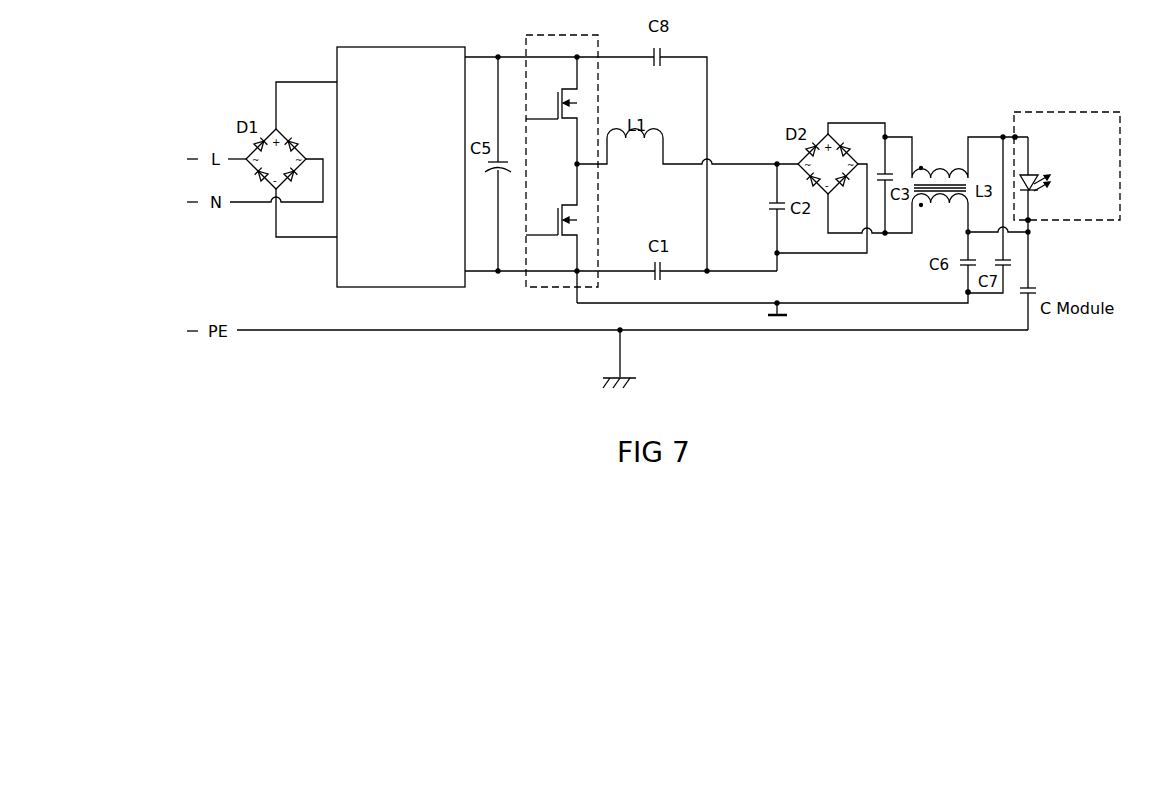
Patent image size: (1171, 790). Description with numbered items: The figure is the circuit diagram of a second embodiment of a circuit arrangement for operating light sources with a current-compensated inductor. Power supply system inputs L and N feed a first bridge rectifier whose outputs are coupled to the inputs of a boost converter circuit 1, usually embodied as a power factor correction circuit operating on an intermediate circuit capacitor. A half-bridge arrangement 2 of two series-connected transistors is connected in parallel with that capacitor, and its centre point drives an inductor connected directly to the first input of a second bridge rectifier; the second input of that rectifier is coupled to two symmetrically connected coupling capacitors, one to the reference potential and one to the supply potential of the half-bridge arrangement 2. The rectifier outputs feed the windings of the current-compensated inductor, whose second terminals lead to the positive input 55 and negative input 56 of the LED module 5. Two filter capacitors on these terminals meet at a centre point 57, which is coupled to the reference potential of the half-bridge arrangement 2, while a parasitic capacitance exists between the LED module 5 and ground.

The boost converter circuit 1 is at (401, 167).
The half-bridge arrangement 2 is at (588, 43).
The LED module 5 is at (1100, 117).
The positive input 55 is at (1015, 136).
The negative input 56 is at (1028, 220).
The centre point 57 is at (968, 292).